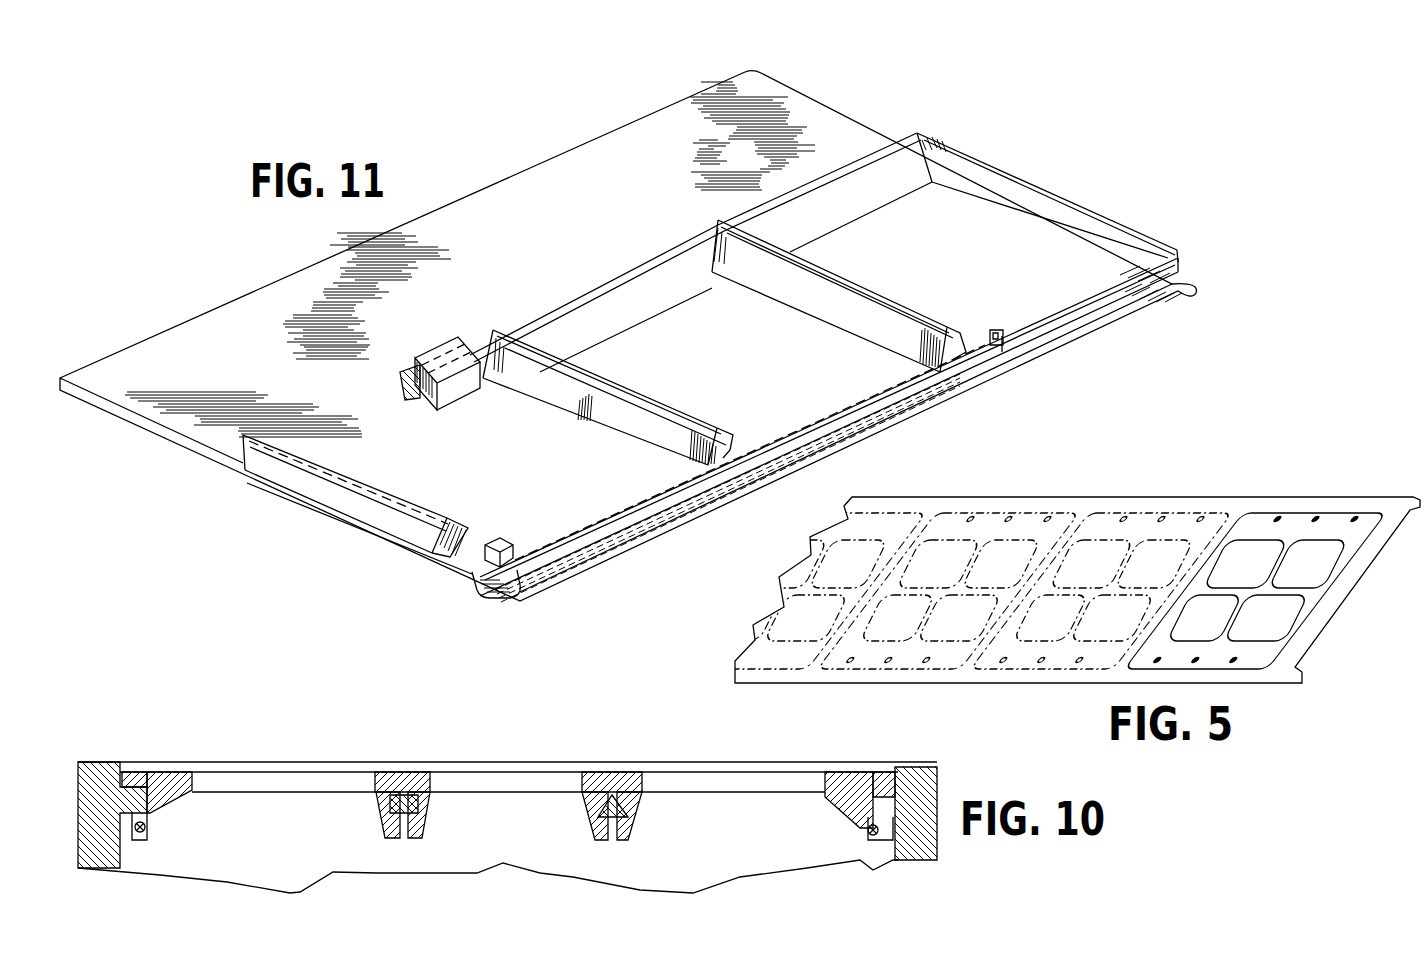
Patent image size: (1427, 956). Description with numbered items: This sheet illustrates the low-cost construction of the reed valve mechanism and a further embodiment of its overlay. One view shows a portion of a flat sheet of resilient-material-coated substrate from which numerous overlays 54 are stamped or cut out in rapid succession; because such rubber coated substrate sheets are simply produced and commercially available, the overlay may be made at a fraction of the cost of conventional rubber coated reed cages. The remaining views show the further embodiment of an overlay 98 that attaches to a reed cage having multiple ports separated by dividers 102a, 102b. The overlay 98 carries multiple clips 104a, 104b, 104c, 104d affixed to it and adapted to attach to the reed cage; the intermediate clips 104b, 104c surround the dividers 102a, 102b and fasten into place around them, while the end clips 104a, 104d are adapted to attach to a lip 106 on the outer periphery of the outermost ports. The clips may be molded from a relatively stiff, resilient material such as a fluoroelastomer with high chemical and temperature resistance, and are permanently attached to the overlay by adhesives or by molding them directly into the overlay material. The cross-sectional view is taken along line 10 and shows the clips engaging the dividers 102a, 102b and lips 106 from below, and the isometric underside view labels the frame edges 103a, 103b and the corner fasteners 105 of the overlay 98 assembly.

In FIG. 11, the overlay 98 is at (930, 162).
In FIG. 10, the overlay 98 is at (340, 763).
In FIG. 11, the clip 104a is at (988, 188).
In FIG. 10, the clip 104a is at (175, 790).
In FIG. 11, the clip 104b is at (790, 288).
In FIG. 10, the clip 104b is at (410, 780).
In FIG. 11, the clip 104c is at (605, 405).
In FIG. 11, the clip 104d is at (400, 490).
In FIG. 10, the clip 104d is at (625, 780).
In FIG. 11, the frame base edge 103a is at (962, 192).
In FIG. 11, the frame base edge 103b is at (770, 448).
In FIG. 11, the fastener clamp 105 is at (390, 380).
In FIG. 10, the fastener clamp 105 is at (146, 826).
In FIG. 10, the lip 106 is at (146, 800).
In FIG. 10, the divider 102a is at (400, 798).
In FIG. 10, the divider 102b is at (612, 800).
In FIG. 5, the overlay 54 is at (987, 515).
In FIG. 11, the section line 10 is at (1152, 190).